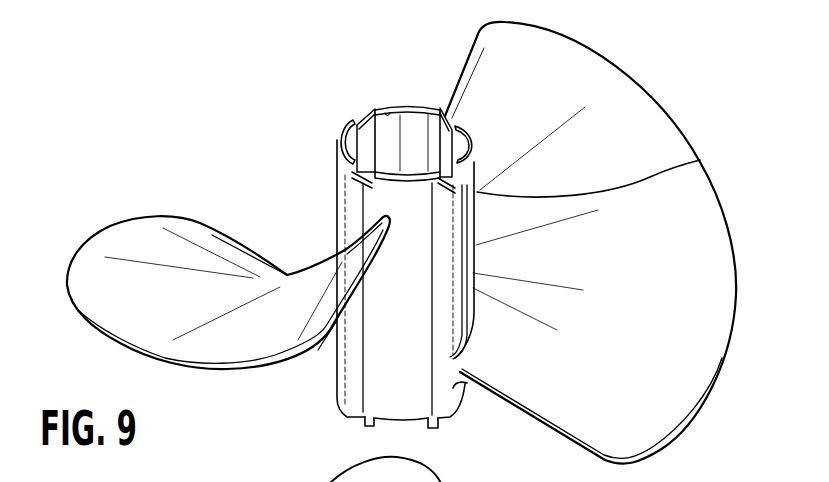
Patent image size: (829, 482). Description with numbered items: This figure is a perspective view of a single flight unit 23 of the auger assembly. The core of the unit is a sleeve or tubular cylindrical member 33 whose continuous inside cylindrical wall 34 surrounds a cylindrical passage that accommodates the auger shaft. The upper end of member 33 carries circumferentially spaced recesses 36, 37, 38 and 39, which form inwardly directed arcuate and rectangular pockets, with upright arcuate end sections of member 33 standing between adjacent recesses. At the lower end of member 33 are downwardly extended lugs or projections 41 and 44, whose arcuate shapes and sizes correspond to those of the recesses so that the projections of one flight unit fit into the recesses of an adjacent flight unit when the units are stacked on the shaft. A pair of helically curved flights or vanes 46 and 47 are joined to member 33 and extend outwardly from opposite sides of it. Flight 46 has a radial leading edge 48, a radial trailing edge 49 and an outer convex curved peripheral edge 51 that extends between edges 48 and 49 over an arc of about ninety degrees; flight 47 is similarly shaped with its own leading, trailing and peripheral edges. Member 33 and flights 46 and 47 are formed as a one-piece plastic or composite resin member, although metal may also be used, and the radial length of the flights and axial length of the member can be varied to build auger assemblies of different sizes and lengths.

The flight unit 23 is at (710, 97).
The recess 39 is at (697, 165).
The flight 47 is at (728, 364).
The flight 46 is at (131, 217).
The radial leading edge 48 is at (265, 262).
The outer convex curved peripheral edge 51 is at (113, 341).
The radial trailing edge 49 is at (318, 352).
The tubular cylindrical member 33 is at (335, 372).
The inside cylindrical wall 34 is at (391, 107).
The recess 36 is at (338, 186).
The recess 37 is at (361, 125).
The recess 38 is at (447, 117).
The projection 41 is at (358, 423).
The projection 44 is at (452, 428).